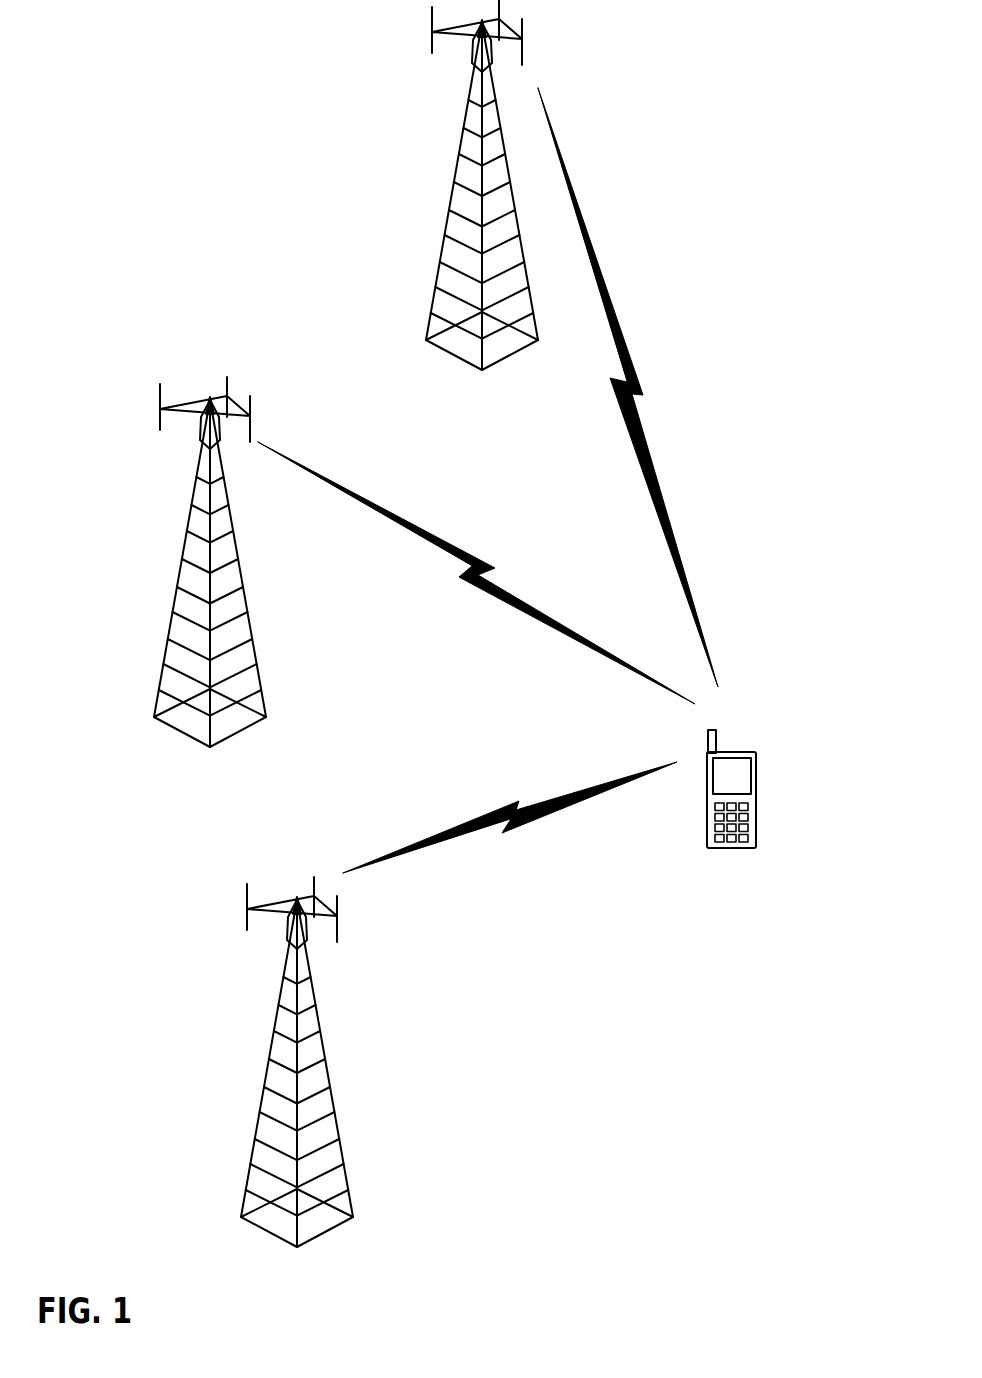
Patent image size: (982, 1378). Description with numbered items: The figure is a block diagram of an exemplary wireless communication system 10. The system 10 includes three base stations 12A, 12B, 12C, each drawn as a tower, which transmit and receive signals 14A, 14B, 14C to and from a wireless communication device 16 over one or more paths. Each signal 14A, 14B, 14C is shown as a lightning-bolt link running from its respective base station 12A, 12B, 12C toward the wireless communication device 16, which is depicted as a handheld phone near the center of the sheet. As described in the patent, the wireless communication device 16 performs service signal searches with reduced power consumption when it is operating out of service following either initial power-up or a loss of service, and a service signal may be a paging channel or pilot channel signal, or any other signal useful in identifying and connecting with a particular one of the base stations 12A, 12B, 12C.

The wireless communication system 10 is at (286, 220).
The base station 12A is at (343, 1099).
The base station 12B is at (272, 695).
The base station 12C is at (427, 283).
The signal 14A is at (520, 827).
The signal 14B is at (400, 510).
The signal 14C is at (635, 425).
The wireless communication device 16 is at (758, 743).